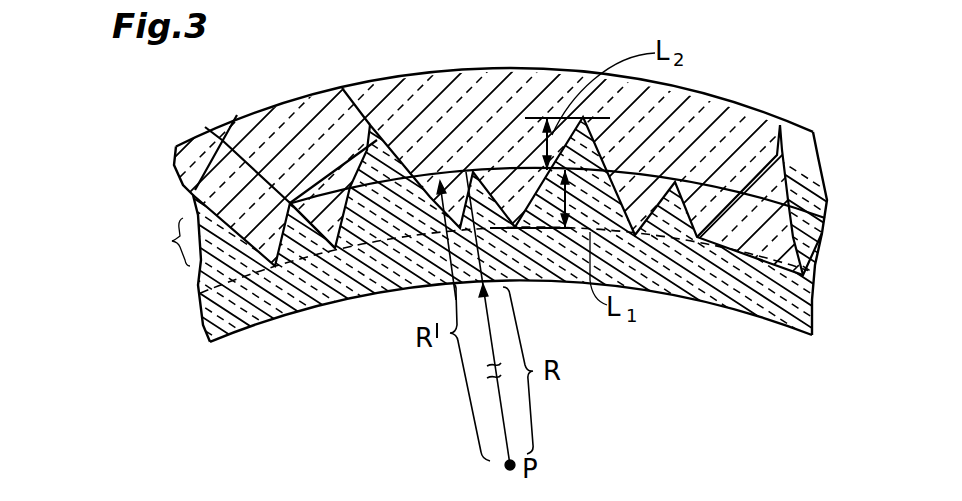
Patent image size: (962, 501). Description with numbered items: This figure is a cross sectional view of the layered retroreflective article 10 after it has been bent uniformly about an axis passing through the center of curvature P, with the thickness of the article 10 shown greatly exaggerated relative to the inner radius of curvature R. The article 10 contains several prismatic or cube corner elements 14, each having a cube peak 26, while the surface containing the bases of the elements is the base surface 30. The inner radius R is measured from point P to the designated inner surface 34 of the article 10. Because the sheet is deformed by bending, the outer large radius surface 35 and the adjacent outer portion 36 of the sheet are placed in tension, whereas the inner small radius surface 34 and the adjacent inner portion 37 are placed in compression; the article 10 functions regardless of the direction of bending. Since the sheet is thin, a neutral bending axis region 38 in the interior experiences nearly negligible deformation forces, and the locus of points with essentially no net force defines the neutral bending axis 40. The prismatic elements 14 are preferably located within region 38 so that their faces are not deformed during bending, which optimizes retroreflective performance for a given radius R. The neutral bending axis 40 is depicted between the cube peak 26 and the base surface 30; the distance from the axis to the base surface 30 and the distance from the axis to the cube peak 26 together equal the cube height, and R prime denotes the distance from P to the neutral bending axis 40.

The layered retroreflective article 10 is at (193, 114).
The prismatic or cube corner elements 14 is at (757, 221).
The cube peak 26 is at (237, 117).
The base surface 30 is at (200, 282).
The inner surface 34 is at (730, 305).
The outer large radius surface 35 is at (773, 110).
The outer portion 36 is at (713, 97).
The inner portion 37 is at (400, 262).
The neutral bending axis region 38 is at (175, 237).
The neutral bending axis 40 is at (828, 220).